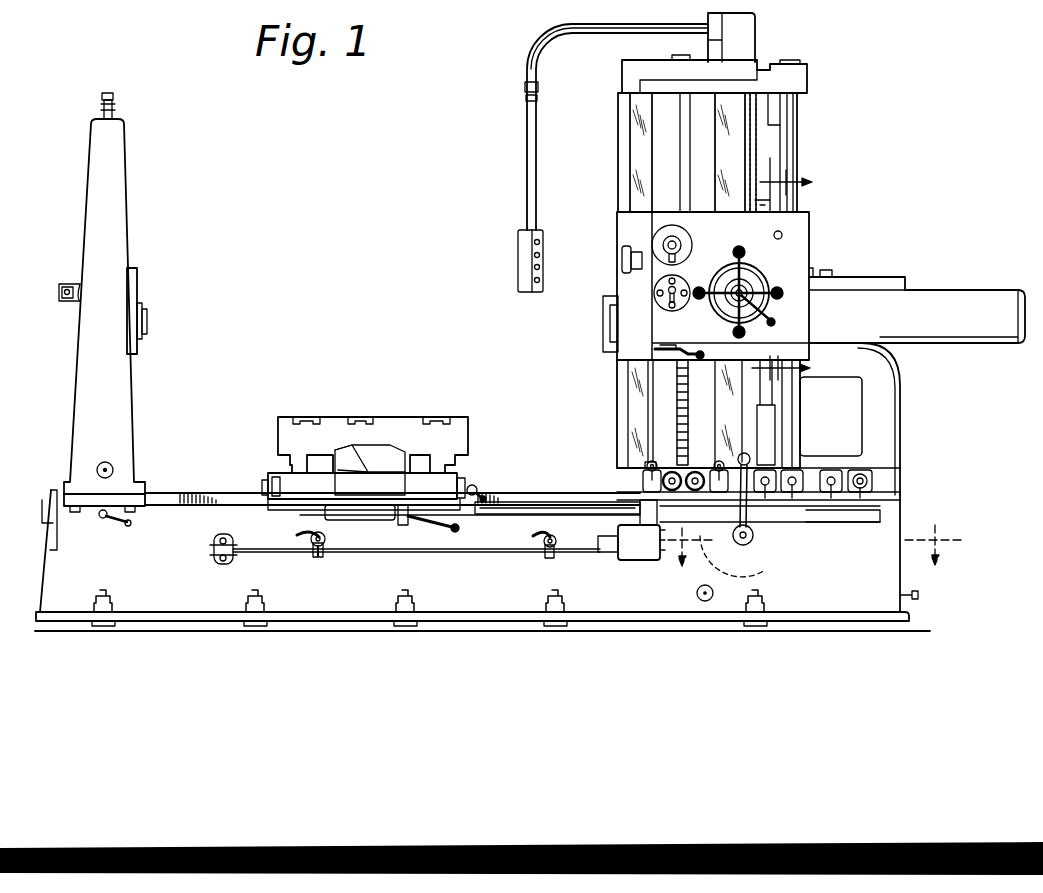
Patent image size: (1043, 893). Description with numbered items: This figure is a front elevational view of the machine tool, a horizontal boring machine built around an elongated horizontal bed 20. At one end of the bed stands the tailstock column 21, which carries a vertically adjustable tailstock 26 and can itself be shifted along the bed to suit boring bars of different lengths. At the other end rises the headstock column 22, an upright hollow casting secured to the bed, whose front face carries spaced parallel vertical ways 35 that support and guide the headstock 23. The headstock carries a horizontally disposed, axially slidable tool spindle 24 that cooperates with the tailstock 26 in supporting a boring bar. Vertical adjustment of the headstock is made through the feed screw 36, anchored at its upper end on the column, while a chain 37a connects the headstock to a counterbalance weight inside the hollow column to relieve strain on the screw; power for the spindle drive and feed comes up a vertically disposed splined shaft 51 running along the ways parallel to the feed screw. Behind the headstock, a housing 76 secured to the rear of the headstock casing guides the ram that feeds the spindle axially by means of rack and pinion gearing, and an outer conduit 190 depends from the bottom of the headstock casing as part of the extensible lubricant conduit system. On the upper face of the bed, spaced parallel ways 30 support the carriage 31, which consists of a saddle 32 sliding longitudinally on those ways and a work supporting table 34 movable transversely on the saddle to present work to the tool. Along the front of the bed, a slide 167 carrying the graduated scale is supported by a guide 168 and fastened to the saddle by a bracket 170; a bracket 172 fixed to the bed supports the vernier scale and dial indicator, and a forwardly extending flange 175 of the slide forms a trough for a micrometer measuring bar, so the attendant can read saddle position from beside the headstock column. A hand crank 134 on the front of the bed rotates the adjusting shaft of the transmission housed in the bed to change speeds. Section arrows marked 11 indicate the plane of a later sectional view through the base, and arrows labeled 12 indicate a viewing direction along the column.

The section line 11- 11 is at (816, 554).
The spindle axis direction arrows 12 is at (798, 270).
The machine bed 20 is at (44, 572).
The tailstock column 21 is at (126, 172).
The headstock column 22 is at (618, 133).
The headstock 23 is at (818, 249).
The tool spindle 24 is at (603, 322).
The tailstock 26 is at (147, 327).
The ways 30 is at (212, 493).
The carriage 31 is at (302, 387).
The saddle 32 is at (270, 472).
The work supporting table 34 is at (374, 410).
The vertical ways 35 is at (637, 155).
The feed screw 36 is at (680, 400).
The chain 37a is at (758, 158).
The splined shaft 51 is at (797, 113).
The housing 76 is at (900, 292).
The hand crank 134 is at (860, 514).
The slide 167 is at (546, 504).
The guide 168 is at (821, 538).
The bracket 170 is at (478, 500).
The bracket 172 is at (634, 498).
The flange 175 is at (503, 522).
The outer conduit 190 is at (785, 415).